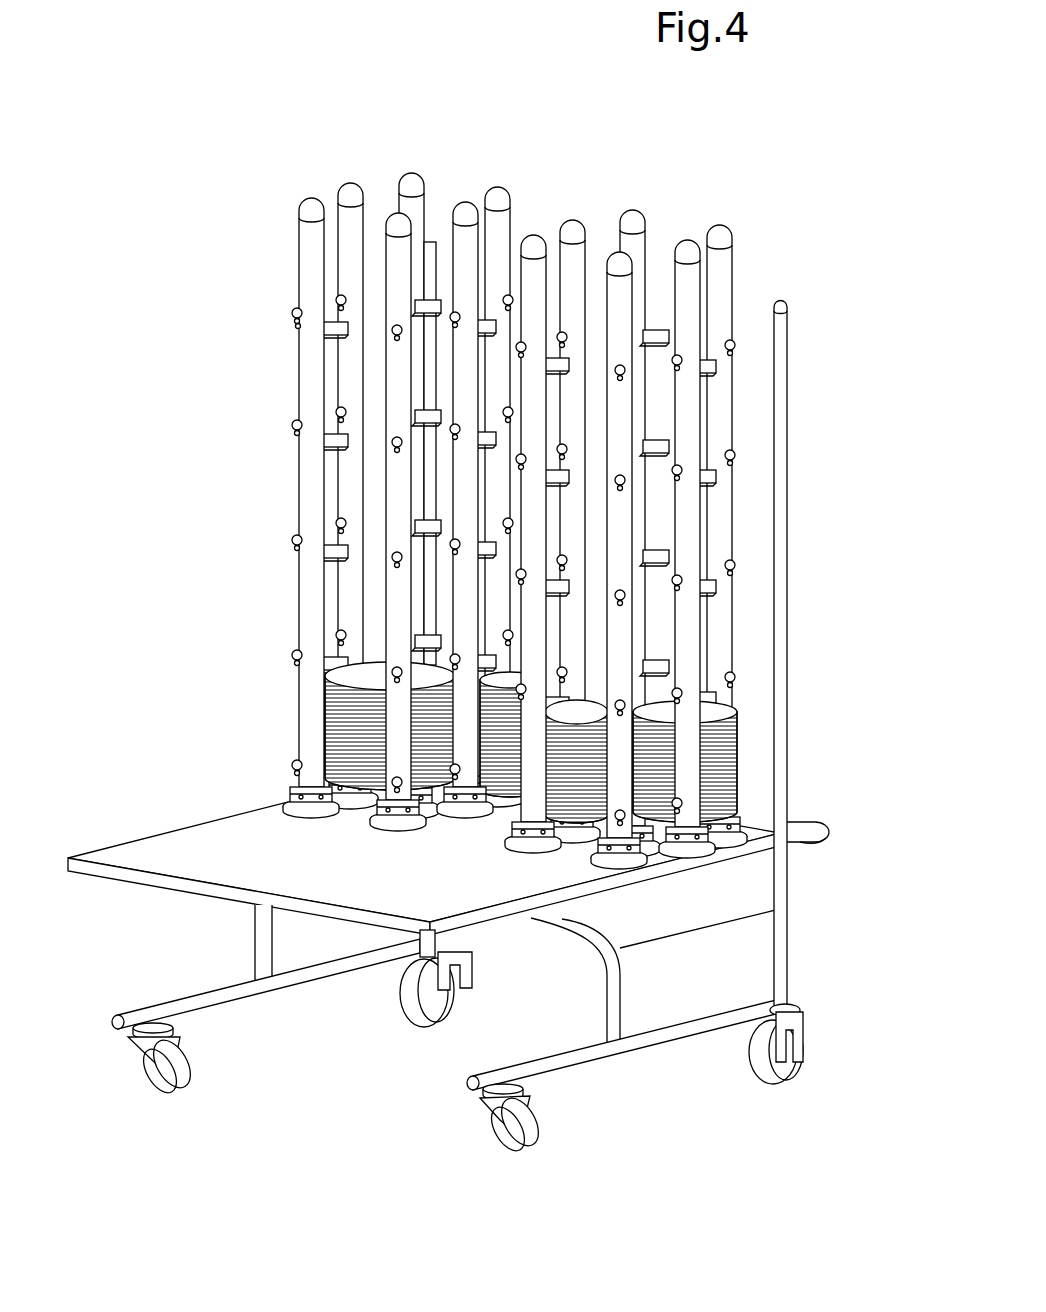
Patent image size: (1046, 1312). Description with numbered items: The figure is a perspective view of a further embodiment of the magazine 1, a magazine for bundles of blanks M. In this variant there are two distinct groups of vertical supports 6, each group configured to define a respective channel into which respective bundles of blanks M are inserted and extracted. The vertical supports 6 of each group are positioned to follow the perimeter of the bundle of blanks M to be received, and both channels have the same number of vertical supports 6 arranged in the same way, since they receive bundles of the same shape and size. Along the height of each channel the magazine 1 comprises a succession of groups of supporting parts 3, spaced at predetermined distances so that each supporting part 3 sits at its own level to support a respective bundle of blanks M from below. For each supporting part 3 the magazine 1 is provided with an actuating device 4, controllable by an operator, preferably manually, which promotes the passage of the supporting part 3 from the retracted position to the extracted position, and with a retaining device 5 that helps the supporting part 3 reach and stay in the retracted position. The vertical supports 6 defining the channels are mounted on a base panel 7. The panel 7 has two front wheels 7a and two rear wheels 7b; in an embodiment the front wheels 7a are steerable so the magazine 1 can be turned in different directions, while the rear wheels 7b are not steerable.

The magazine 1 is at (186, 238).
The supporting part 3 is at (340, 338).
The actuating device 4 is at (290, 313).
The retaining device 5 is at (296, 326).
The vertical support 6 is at (298, 252).
The base panel 7 is at (133, 828).
The front wheel 7a is at (193, 1053).
The rear wheel 7b is at (430, 1027).
The bundle of blanks M is at (338, 718).